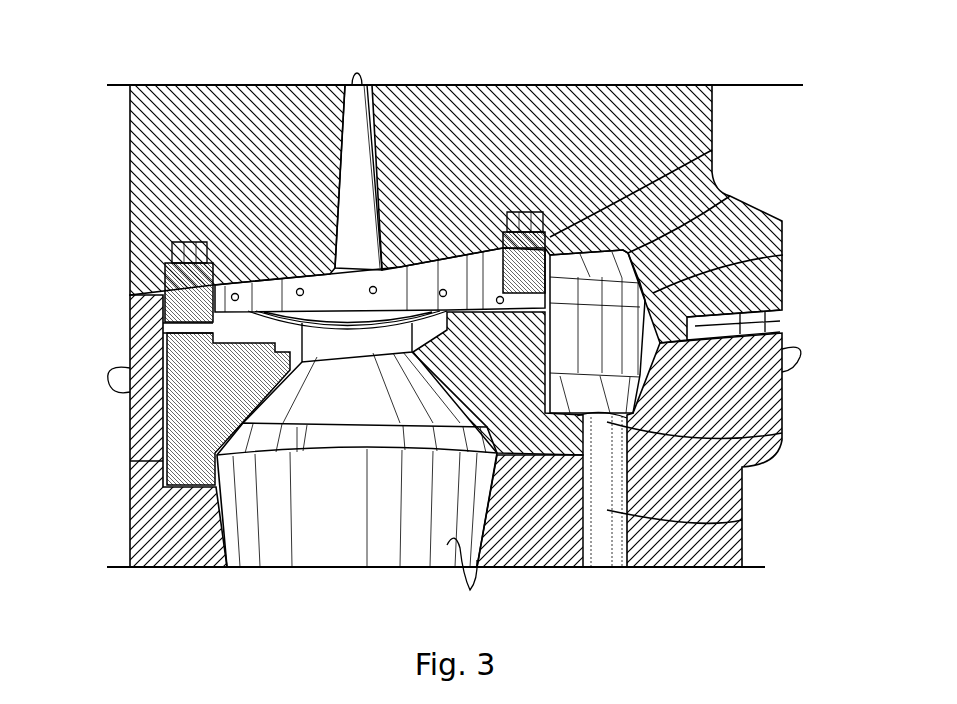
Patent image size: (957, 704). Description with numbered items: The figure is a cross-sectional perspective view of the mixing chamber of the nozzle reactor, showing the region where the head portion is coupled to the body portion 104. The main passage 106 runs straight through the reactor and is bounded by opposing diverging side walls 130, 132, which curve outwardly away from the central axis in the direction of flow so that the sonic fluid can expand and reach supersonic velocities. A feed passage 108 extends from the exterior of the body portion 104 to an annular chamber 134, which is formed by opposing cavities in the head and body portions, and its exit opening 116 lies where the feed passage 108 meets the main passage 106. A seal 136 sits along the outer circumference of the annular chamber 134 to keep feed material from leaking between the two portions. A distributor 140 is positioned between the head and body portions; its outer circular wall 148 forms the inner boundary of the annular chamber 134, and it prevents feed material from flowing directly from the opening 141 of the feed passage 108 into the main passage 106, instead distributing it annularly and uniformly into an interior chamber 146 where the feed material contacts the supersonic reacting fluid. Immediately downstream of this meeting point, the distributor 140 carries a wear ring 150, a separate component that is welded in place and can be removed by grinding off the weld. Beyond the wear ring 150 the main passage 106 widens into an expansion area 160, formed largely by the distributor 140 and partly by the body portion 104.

The body portion 104 is at (150, 524).
The main passage 106 is at (368, 157).
The feed passage 108 is at (742, 520).
The exit opening 116 is at (473, 258).
The diverging side wall 130 is at (332, 185).
The diverging side wall 132 is at (385, 228).
The annular chamber 134 is at (730, 196).
The seal 136 is at (783, 255).
The distributor 140 is at (360, 442).
The opening of the feed passage 141 is at (782, 433).
The interior chamber 146 is at (257, 290).
The outer circular wall 148 is at (712, 150).
The wear ring 150 is at (363, 333).
The expansion area 160 is at (297, 427).